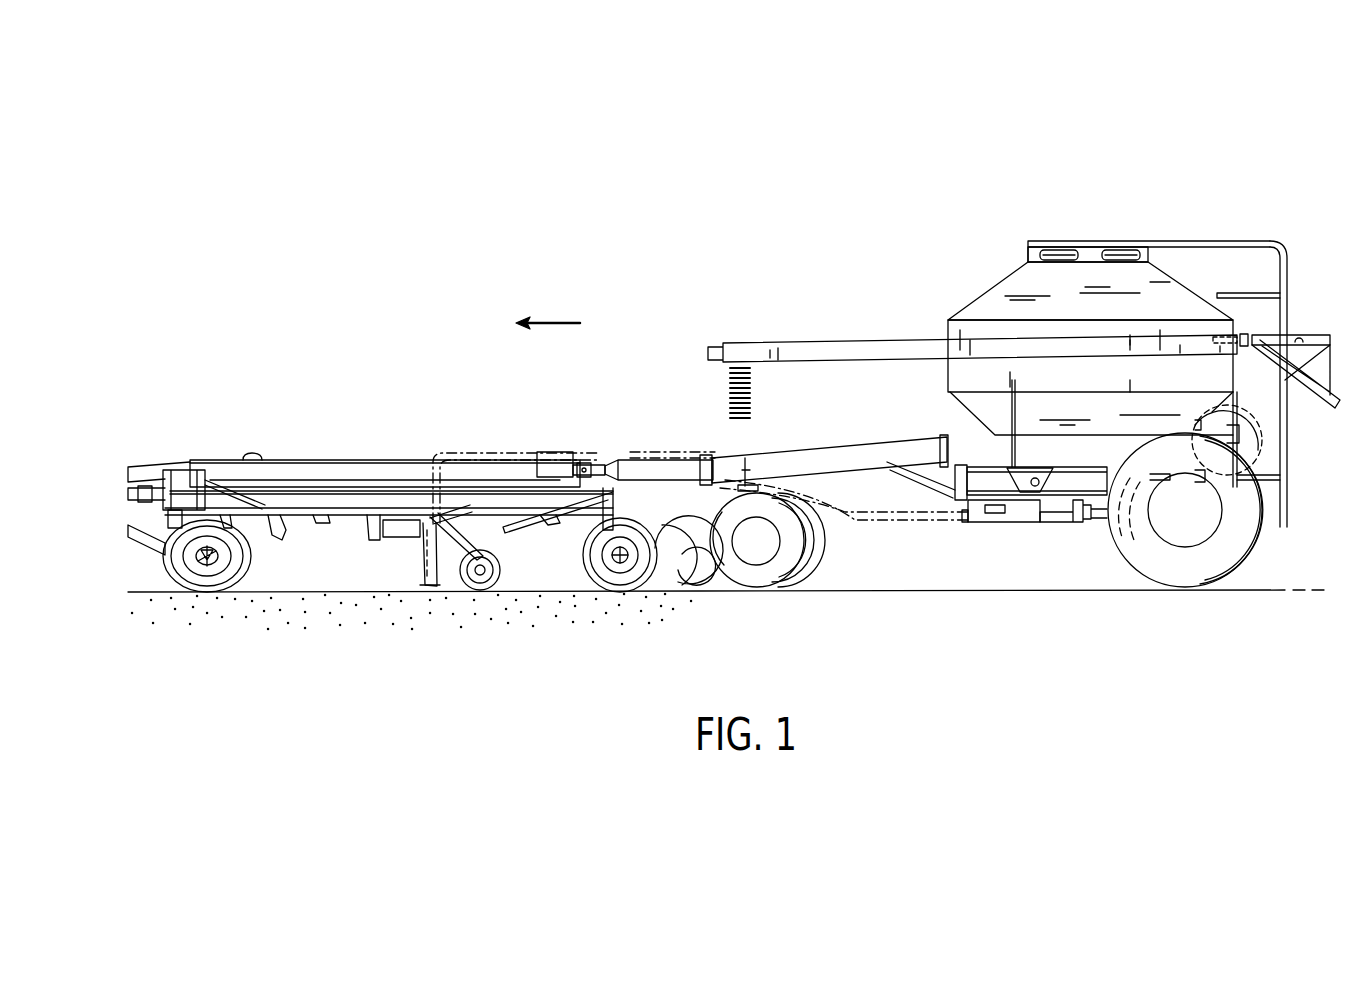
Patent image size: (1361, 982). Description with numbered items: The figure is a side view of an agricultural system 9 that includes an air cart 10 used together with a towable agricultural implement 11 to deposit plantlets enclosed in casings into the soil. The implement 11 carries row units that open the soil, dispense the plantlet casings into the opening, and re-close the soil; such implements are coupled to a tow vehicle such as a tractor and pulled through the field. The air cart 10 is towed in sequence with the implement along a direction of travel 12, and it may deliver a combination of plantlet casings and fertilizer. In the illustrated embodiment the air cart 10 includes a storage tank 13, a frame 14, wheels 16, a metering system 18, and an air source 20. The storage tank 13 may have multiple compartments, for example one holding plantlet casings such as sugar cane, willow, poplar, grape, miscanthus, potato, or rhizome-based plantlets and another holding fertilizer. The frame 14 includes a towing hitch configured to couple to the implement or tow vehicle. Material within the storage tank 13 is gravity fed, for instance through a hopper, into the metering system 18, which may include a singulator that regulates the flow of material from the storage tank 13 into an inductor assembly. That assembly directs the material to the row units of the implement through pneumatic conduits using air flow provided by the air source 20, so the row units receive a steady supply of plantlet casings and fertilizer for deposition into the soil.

The agricultural system 9 is at (1200, 138).
The air cart 10 is at (994, 224).
The towable agricultural implement 11 is at (393, 406).
The direction of travel 12 is at (556, 322).
The storage tank 13 is at (1013, 283).
The frame 14 is at (826, 448).
The wheels 16 is at (825, 545).
The metering system 18 is at (1050, 485).
The air source 20 is at (1250, 432).